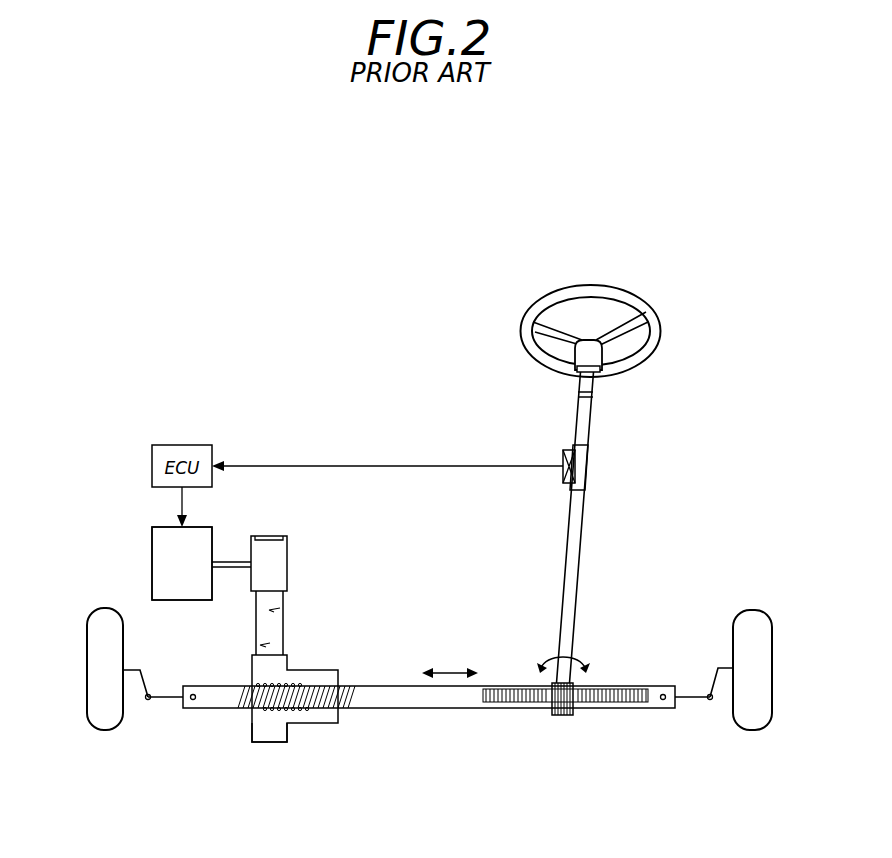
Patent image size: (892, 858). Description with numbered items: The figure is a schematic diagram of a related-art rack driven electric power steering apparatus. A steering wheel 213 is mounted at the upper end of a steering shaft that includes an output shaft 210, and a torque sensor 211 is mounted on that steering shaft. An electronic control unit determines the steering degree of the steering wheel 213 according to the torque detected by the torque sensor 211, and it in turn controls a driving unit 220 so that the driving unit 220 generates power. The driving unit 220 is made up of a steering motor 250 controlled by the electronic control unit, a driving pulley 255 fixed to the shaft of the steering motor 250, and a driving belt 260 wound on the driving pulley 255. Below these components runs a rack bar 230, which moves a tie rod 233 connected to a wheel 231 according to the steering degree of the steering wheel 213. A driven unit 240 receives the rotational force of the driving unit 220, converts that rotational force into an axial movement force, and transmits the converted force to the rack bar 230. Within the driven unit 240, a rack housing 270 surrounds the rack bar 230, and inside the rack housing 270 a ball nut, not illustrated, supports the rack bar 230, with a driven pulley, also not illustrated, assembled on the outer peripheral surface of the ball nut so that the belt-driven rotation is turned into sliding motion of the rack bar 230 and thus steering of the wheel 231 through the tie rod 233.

The output shaft 210 is at (591, 481).
The torque sensor 211 is at (564, 456).
The steering wheel 213 is at (608, 296).
The driving unit 220 is at (141, 531).
The rack bar 230 is at (373, 690).
The wheel 231 is at (752, 612).
The tie rod 233 is at (695, 692).
The driven unit 240 is at (307, 735).
The steering motor 250 is at (160, 569).
The driving pulley 255 is at (284, 550).
The driving belt 260 is at (284, 622).
The rack housing 270 is at (262, 742).